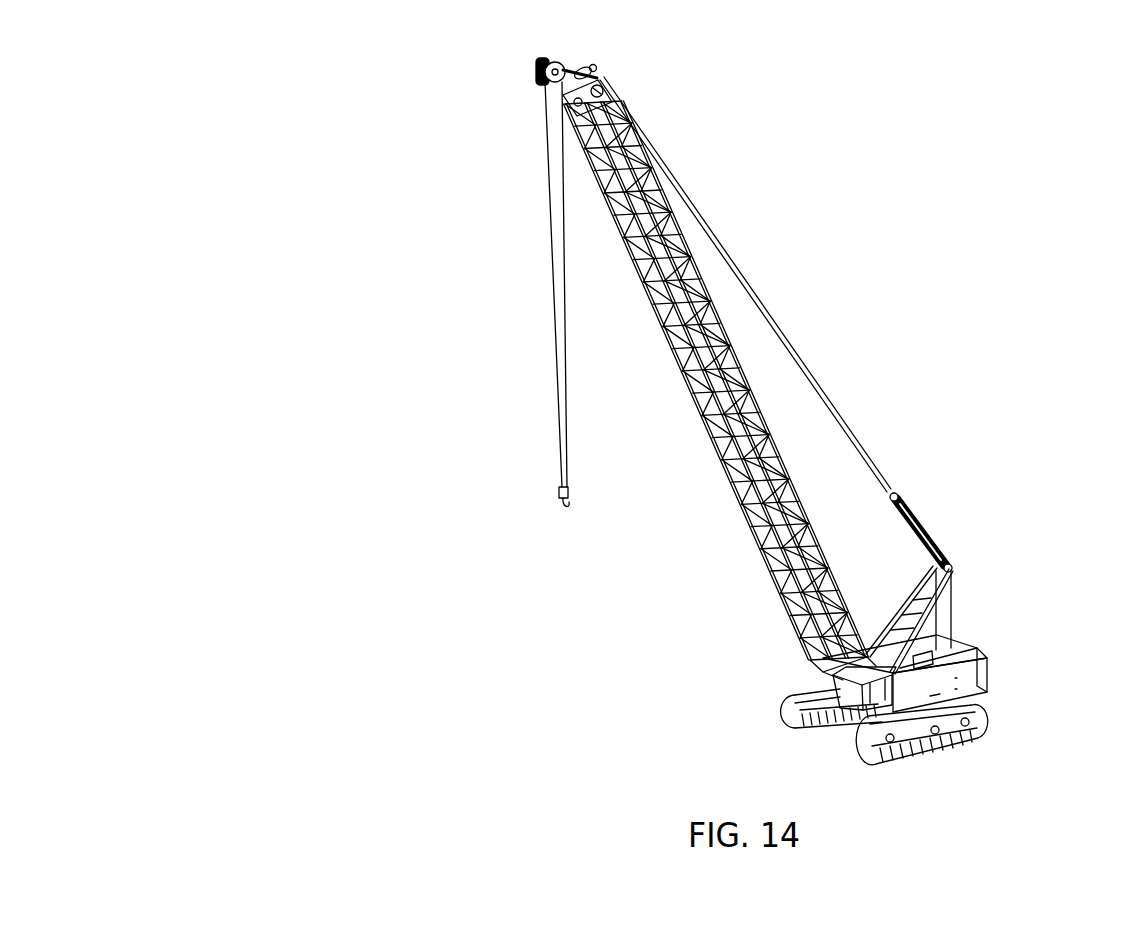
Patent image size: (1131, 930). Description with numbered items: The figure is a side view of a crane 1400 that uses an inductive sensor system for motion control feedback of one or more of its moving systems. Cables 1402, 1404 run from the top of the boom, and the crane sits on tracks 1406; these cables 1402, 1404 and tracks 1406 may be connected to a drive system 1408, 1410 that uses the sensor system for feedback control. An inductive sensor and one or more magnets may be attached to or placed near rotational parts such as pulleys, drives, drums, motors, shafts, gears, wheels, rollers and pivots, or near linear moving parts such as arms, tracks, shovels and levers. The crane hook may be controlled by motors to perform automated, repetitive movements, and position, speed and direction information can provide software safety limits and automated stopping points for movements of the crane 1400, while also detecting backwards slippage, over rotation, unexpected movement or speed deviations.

The crane 1400 is at (297, 92).
The cable 1402 is at (550, 330).
The cable 1404 is at (790, 347).
The tracks 1406 is at (972, 722).
The drive system 1408 is at (544, 88).
The drive system 1410 is at (578, 70).